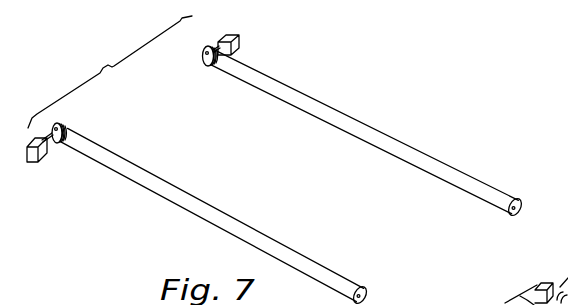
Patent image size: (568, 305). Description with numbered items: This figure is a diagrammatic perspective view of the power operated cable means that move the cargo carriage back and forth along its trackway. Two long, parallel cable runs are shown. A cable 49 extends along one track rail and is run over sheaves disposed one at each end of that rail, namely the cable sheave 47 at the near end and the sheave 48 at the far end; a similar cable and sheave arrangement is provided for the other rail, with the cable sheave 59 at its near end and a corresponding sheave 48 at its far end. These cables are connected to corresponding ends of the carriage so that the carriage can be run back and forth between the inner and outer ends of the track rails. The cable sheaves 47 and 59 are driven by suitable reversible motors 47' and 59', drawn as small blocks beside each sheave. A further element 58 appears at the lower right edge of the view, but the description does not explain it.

The cable sheave 47 is at (72, 126).
The reversible motor 47' is at (56, 158).
The sheave 48 is at (522, 203).
The cable 49 is at (388, 132).
The roller 58 is at (520, 297).
The cable sheave 59 is at (189, 54).
The reversible motor 59' is at (250, 44).